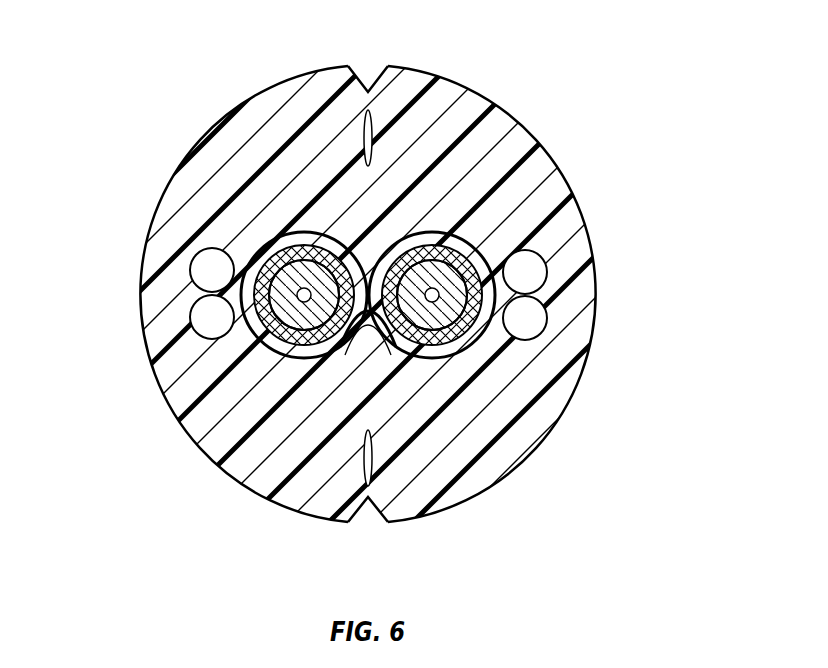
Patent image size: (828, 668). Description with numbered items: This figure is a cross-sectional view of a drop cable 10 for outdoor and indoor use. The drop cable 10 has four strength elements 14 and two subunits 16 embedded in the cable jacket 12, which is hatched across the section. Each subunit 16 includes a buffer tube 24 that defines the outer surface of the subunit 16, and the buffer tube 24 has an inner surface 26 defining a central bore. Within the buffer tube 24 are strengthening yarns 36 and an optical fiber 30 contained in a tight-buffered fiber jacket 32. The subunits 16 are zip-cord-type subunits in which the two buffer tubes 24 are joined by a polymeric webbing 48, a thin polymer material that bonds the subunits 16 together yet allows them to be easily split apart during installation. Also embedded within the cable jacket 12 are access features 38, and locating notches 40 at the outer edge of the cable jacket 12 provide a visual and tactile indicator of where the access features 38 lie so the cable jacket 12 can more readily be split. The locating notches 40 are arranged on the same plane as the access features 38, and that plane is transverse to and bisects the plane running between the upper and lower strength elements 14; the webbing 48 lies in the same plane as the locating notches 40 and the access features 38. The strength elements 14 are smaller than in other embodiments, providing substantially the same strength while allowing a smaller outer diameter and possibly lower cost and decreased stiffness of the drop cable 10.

The drop cable 10 is at (209, 96).
The cable jacket 12 is at (203, 378).
The strength elements 14 is at (203, 315).
The subunit 16 is at (265, 358).
The buffer tube 24 is at (470, 338).
The inner surface 26 is at (480, 242).
The optical fiber 30 is at (307, 288).
The tight-buffered fiber jacket 32 is at (304, 315).
The strengthening yarns 36 is at (296, 255).
The access features 38 is at (374, 118).
The locating notches 40 is at (373, 58).
The polymeric webbing 48 is at (372, 338).